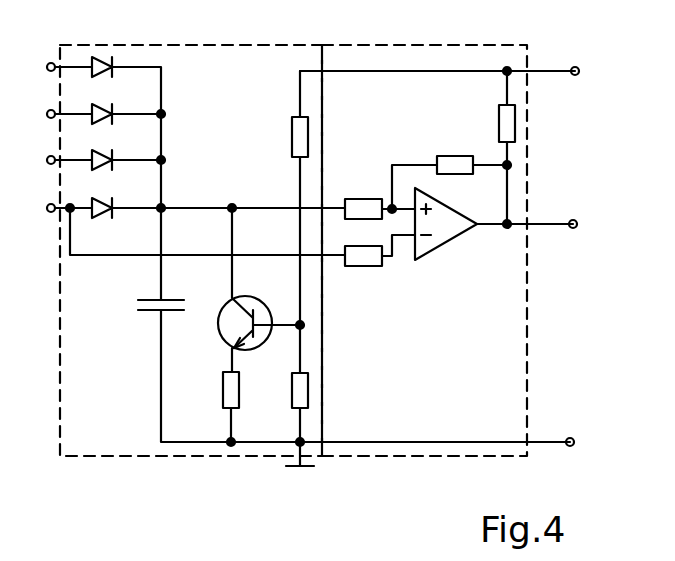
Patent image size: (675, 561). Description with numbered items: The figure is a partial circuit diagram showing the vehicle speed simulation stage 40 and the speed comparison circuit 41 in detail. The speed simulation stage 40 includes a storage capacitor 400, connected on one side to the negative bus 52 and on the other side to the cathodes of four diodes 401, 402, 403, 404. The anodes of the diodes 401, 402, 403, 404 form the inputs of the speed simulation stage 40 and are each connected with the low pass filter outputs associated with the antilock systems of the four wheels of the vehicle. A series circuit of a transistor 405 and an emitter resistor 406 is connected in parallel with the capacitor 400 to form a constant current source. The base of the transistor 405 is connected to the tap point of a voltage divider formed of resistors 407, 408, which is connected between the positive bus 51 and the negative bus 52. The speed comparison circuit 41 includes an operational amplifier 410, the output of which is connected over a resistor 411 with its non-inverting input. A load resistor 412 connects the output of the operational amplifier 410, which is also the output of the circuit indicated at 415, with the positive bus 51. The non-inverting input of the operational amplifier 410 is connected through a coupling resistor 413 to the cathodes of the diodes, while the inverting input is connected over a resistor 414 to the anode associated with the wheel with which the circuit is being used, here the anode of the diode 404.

The vehicle speed simulation stage 40 is at (103, 446).
The speed comparison circuit 41 is at (505, 416).
The positive bus 51 is at (568, 69).
The negative bus 52 is at (557, 441).
The storage capacitor 400 is at (152, 312).
The diode 401 is at (112, 67).
The diode 402 is at (114, 113).
The diode 403 is at (114, 160).
The diode 404 is at (114, 208).
The transistor 405 is at (223, 325).
The emitter resistor 406 is at (262, 392).
The resistor 407 is at (297, 133).
The resistor 408 is at (296, 390).
The operational amplifier 410 is at (446, 244).
The resistor 411 is at (458, 133).
The load resistor 412 is at (505, 118).
The coupling resistor 413 is at (378, 183).
The resistor 414 is at (364, 266).
The circuit output 415 is at (571, 232).